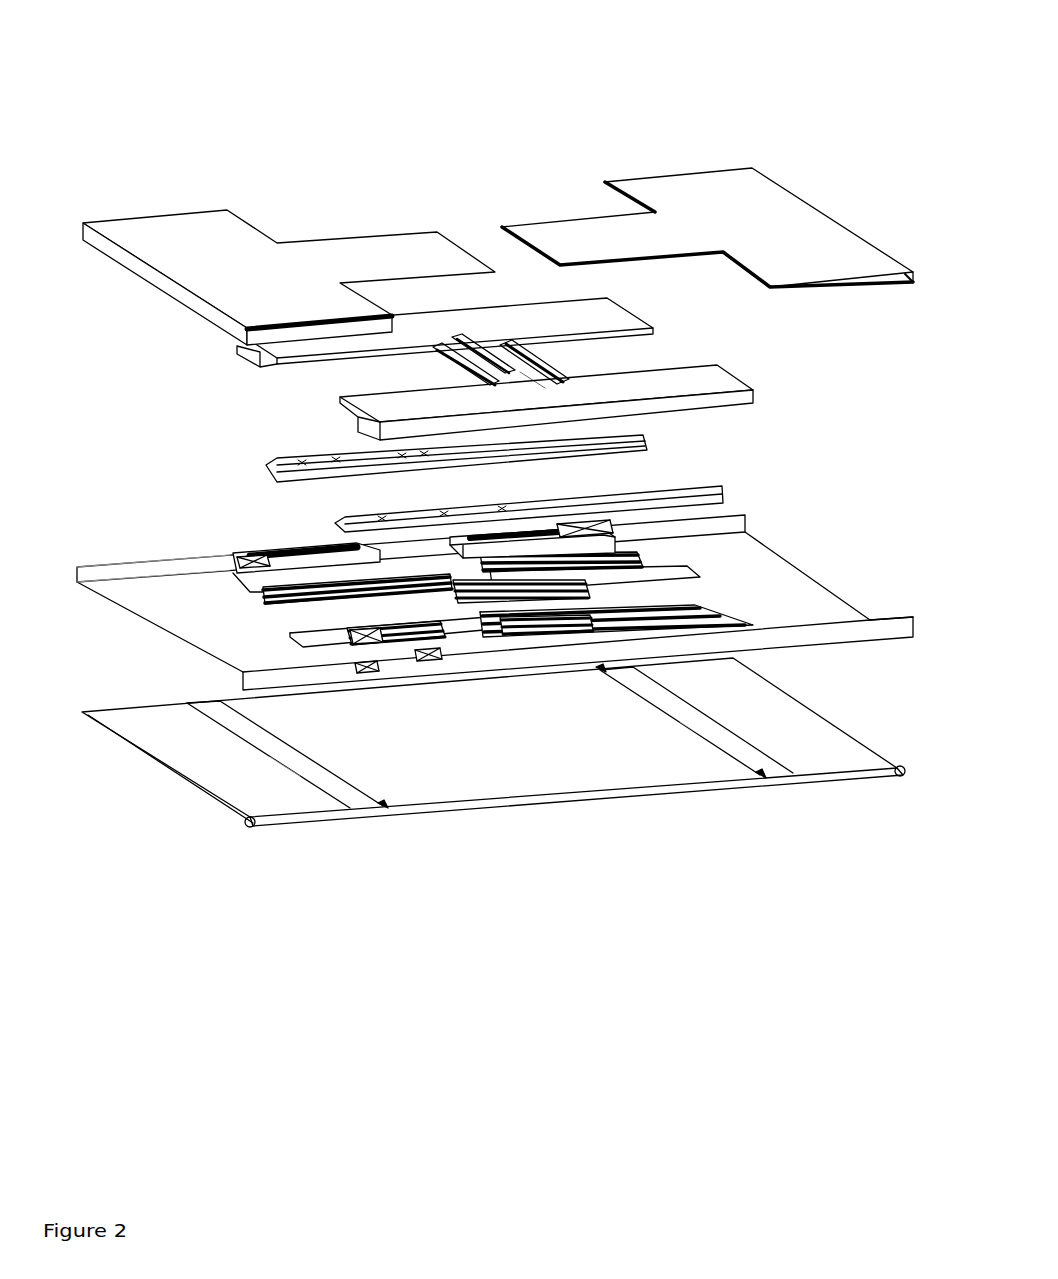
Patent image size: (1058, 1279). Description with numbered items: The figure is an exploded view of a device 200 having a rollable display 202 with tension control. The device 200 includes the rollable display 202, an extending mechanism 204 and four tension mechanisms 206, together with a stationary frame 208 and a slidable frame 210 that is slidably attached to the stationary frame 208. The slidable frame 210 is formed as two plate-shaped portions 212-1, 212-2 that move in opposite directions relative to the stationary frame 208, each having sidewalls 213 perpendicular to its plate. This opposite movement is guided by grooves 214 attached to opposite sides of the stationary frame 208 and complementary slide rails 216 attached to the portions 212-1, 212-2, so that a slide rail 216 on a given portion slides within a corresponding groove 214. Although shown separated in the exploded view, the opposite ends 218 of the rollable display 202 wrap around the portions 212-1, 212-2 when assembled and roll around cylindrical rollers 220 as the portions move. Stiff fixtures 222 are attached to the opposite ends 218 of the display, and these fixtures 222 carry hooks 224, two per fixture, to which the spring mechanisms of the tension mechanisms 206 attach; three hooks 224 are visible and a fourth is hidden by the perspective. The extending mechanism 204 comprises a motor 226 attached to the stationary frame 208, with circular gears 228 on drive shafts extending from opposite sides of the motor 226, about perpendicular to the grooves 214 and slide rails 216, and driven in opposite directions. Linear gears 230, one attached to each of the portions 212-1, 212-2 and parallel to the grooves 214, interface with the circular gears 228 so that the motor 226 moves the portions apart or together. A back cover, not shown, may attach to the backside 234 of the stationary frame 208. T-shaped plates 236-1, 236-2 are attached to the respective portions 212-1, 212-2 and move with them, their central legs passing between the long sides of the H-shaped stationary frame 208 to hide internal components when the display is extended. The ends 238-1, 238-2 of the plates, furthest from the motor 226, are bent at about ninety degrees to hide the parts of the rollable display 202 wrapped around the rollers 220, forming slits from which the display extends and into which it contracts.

The device 200 is at (861, 28).
The rollable display 202 is at (163, 705).
The extending mechanism 204 is at (651, 342).
The tension mechanisms 206 is at (570, 520).
The stationary frame 208 is at (745, 383).
The slidable frame 210 is at (803, 587).
The first portion of slidable frame 212-1 is at (259, 632).
The second portion of slidable frame 212-2 is at (621, 584).
The sidewalls 213 is at (115, 568).
The grooves 214 is at (277, 462).
The slide rails 216 is at (265, 592).
The opposite ends of rollable display 218 is at (307, 777).
The rollers 220 is at (257, 828).
The fixtures 222 is at (283, 740).
The hooks 224 is at (382, 807).
The motor 226 is at (493, 367).
The circular gears 228 is at (470, 348).
The linear gears 230 is at (453, 597).
The backside of stationary frame 234 is at (533, 373).
The first plate 236-1 is at (143, 220).
The second plate 236-2 is at (848, 245).
The first plate end 238-1 is at (237, 345).
The second plate end 238-2 is at (912, 284).